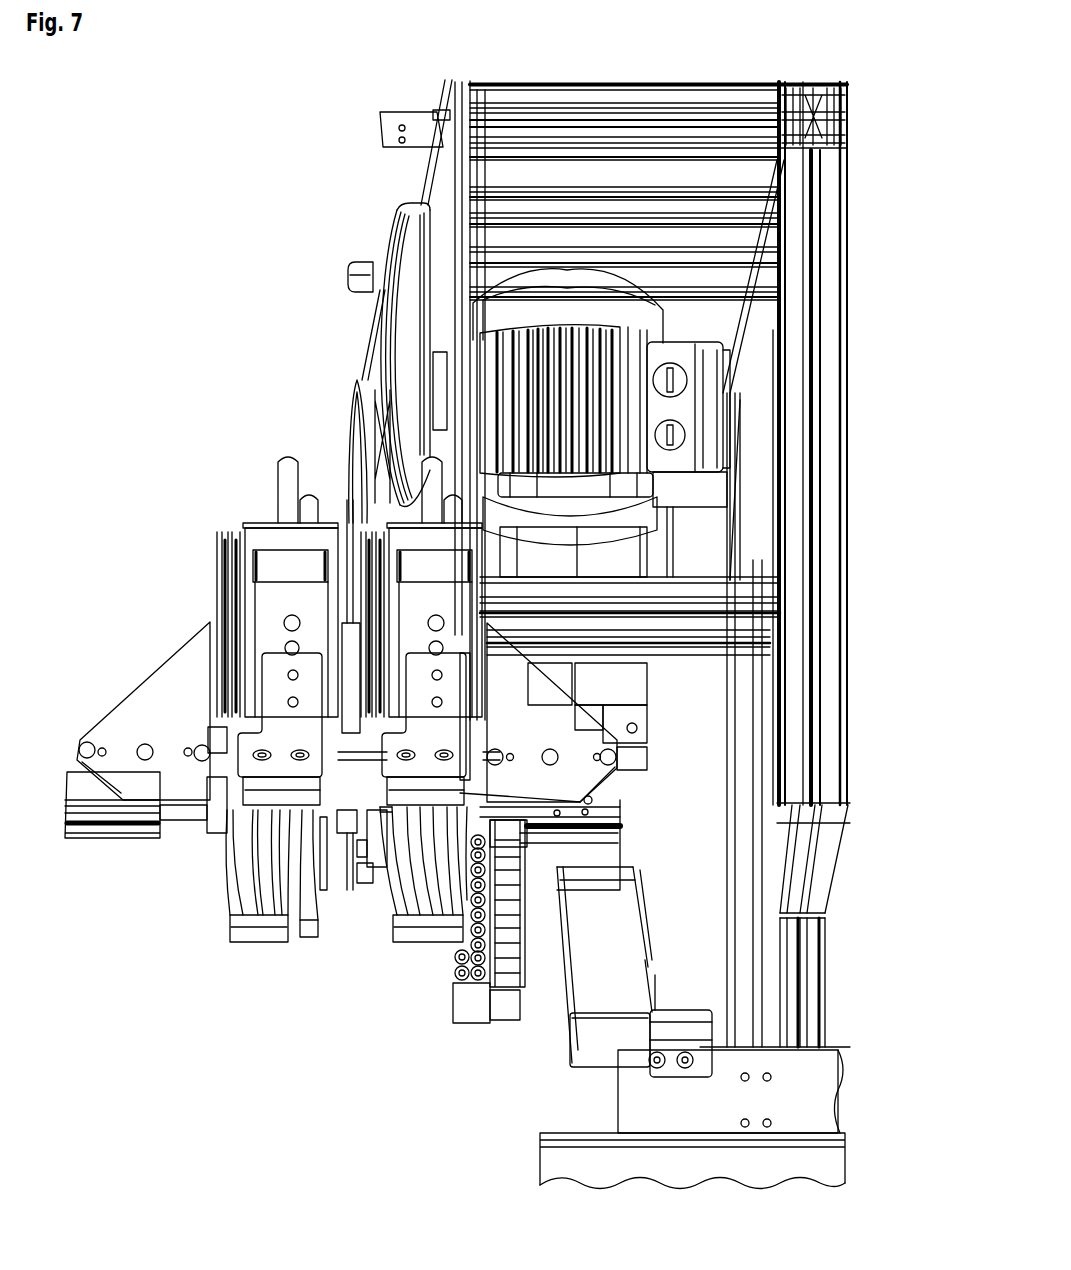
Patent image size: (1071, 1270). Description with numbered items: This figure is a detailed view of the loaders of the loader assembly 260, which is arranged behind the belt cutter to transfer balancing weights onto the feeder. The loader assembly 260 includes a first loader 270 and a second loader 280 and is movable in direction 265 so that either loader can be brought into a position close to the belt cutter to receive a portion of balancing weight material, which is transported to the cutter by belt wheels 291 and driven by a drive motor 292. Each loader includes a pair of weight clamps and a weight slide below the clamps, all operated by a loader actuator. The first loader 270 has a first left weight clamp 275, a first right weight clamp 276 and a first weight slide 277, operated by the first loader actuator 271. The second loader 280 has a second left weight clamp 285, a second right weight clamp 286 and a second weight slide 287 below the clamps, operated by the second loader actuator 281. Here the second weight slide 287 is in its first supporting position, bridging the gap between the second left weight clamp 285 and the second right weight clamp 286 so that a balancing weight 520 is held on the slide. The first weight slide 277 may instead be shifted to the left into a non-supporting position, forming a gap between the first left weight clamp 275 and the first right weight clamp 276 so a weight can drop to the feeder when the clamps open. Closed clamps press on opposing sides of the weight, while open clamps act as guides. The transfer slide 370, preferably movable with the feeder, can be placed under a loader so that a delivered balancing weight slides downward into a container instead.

The loader assembly 260 is at (457, 634).
The direction 265 is at (295, 302).
The first loader 270 is at (234, 966).
The first loader actuator 271 is at (223, 631).
The first left weight clamp 275 is at (252, 926).
The first right weight clamp 276 is at (316, 966).
The first weight slide 277 is at (196, 895).
The second loader 280 is at (315, 1001).
The second loader actuator 281 is at (376, 597).
The second left weight clamp 285 is at (284, 874).
The second right weight clamp 286 is at (438, 963).
The second weight slide 287 is at (401, 1001).
The belt wheels 291 is at (381, 323).
The drive motor 292 is at (712, 423).
The transfer slide 370 is at (639, 972).
The balancing weight 520 is at (585, 796).